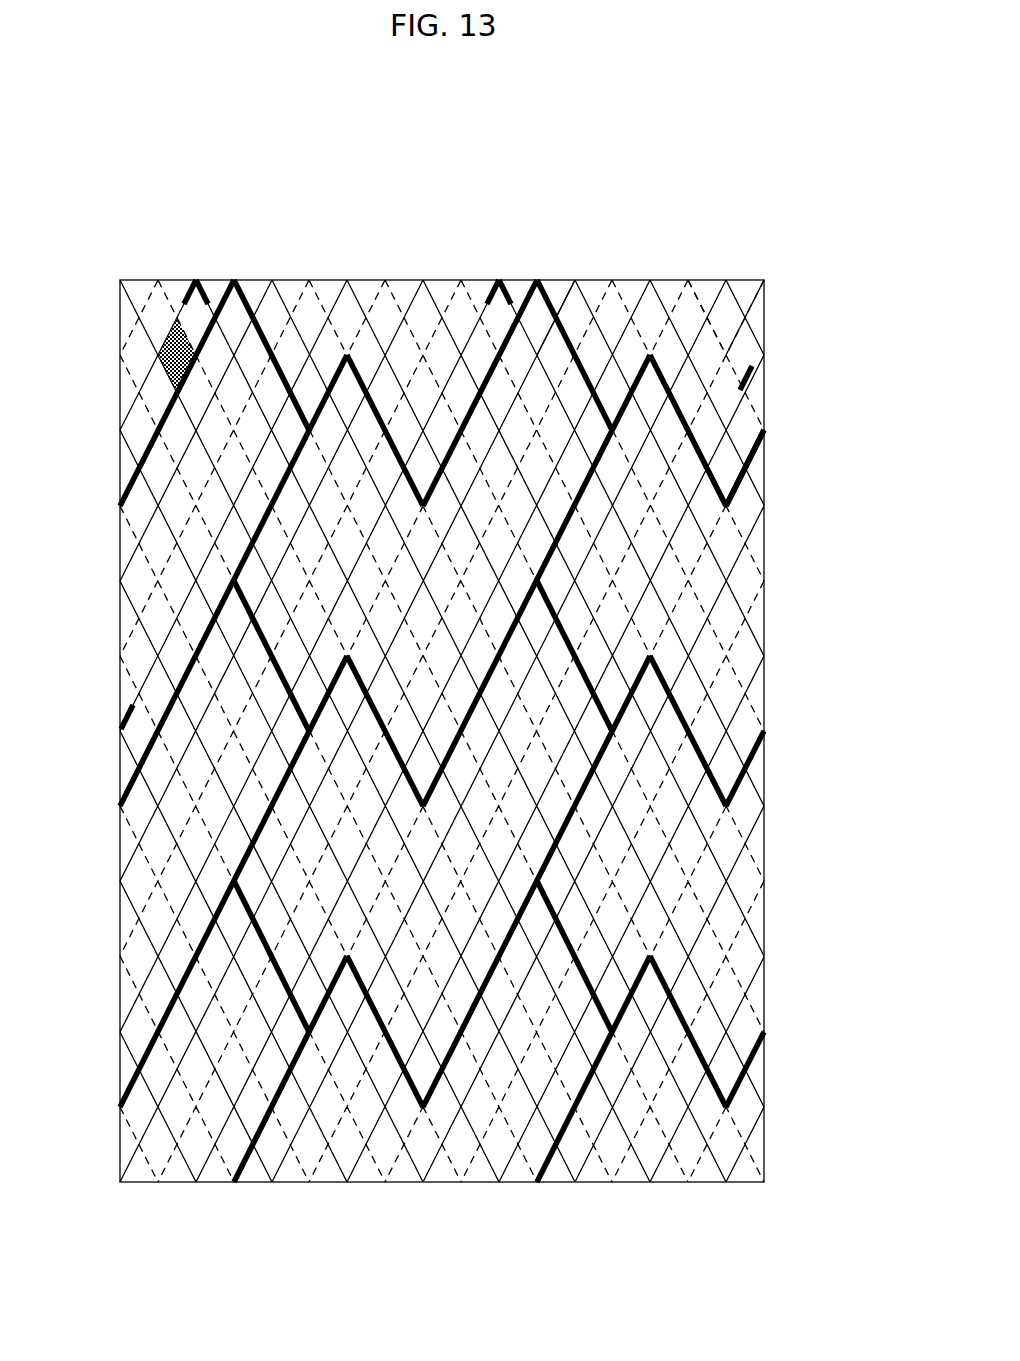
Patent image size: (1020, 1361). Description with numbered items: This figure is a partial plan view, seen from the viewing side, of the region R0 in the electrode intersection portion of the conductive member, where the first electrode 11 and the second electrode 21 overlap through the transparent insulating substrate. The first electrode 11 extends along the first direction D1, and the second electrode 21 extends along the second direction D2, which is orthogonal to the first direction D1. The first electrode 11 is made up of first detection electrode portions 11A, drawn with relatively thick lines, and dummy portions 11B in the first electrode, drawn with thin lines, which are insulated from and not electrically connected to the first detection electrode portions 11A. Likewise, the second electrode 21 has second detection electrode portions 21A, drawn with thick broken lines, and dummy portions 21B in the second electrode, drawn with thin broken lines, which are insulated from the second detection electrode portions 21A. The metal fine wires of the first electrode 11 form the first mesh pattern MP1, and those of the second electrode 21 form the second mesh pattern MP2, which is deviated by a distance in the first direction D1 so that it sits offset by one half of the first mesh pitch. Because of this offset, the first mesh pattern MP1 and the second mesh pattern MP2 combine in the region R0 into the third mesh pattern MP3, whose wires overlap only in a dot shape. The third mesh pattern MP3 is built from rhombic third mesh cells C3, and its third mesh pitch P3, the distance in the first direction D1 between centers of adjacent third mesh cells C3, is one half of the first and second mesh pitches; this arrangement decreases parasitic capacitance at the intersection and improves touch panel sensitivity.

The region R0 is at (766, 335).
The first electrode 11 is at (127, 479).
The second electrode 21 is at (155, 500).
The first detection electrode portion 11A is at (766, 455).
The second detection electrode portion 21A is at (769, 384).
The dummy portion in the first electrode 11B is at (583, 295).
The dummy portion in the second electrode 21B is at (703, 285).
The first mesh pattern MP1 is at (131, 788).
The second mesh pattern MP2 is at (132, 711).
The third mesh pattern MP3 is at (776, 289).
The third mesh cell C3 is at (155, 364).
The third mesh pitch P3 is at (234, 393).
The first direction D1 is at (420, 250).
The second direction D2 is at (790, 581).